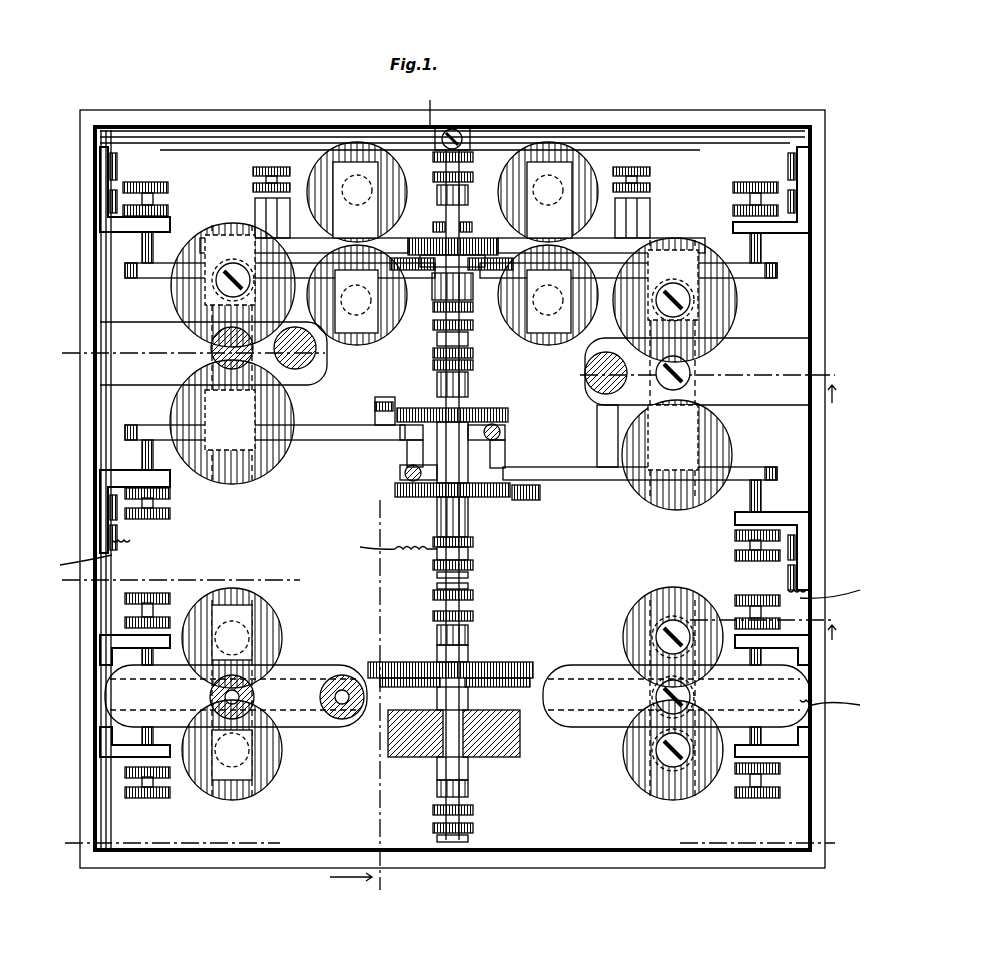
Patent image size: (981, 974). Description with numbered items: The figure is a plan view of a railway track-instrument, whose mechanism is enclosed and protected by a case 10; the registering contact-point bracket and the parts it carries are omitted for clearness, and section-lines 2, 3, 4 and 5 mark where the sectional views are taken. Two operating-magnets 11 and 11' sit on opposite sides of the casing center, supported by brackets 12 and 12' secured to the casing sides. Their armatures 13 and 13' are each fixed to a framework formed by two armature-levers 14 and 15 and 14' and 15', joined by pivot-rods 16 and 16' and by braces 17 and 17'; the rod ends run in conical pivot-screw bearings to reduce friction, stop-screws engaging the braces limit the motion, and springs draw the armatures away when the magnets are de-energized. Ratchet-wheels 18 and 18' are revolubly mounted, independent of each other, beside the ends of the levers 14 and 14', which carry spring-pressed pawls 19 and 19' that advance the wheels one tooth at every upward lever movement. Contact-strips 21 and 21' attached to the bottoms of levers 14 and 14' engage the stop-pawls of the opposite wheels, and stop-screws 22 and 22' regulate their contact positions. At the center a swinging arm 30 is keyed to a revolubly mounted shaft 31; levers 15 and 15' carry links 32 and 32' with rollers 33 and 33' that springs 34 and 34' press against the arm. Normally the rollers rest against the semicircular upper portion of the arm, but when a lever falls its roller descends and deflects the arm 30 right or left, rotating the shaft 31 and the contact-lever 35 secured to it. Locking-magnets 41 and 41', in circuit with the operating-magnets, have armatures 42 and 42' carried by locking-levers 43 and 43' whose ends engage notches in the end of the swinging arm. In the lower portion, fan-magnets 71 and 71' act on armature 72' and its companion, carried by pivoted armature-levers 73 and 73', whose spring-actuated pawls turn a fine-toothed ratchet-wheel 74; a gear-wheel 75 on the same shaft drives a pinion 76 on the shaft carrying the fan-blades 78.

The section-line 2 2 is at (382, 497).
The section-line 3 3 is at (449, 374).
The section-line 4 4 is at (450, 606).
The section-line 5 5 is at (449, 845).
The case 10 is at (826, 472).
The operating-magnet 11 is at (675, 374).
The operating-magnet 11' is at (232, 353).
The bracket 12 is at (696, 371).
The bracket 12' is at (213, 353).
The armature 13 is at (669, 467).
The armature 13' is at (250, 443).
The armature-lever 14 is at (640, 462).
The armature-lever 14' is at (265, 444).
The armature-lever 15 is at (628, 258).
The armature-lever 15' is at (280, 257).
The pivot-rod 16 is at (777, 428).
The pivot-rod 16' is at (125, 399).
The brace 17 is at (592, 436).
The brace 17' is at (356, 400).
The ratchet-wheel 18 is at (452, 500).
The ratchet-wheel 18' is at (452, 347).
The pawl 19 is at (519, 508).
The pawl 19' is at (387, 392).
The contact-strip 21 is at (498, 446).
The contact-strip 21' is at (404, 452).
The stop-screw 22 is at (508, 432).
The stop-screw 22' is at (395, 477).
The swinging arm 30 is at (445, 258).
The shaft 31 is at (435, 198).
The link 32 is at (490, 282).
The link 32' is at (410, 269).
The roller 33 is at (453, 229).
The roller 33' is at (440, 242).
The spring 34 is at (538, 301).
The spring 34' is at (356, 301).
The contact-lever 35 is at (440, 224).
The locking-magnet 41 is at (548, 247).
The locking-magnet 41' is at (356, 247).
The armature 42 is at (549, 200).
The armature 42' is at (355, 200).
The locking-lever 43 is at (601, 245).
The locking-lever 43' is at (304, 245).
The fan-magnet 71 is at (673, 695).
The fan-magnet 71' is at (233, 697).
The armature 72' is at (232, 632).
The armature-lever 73 is at (667, 707).
The armature-lever 73' is at (242, 712).
The fine-toothed ratchet-wheel 74 is at (420, 687).
The gear-wheel 75 is at (482, 687).
The pinion 76 is at (478, 661).
The fan-blades 78 is at (454, 733).